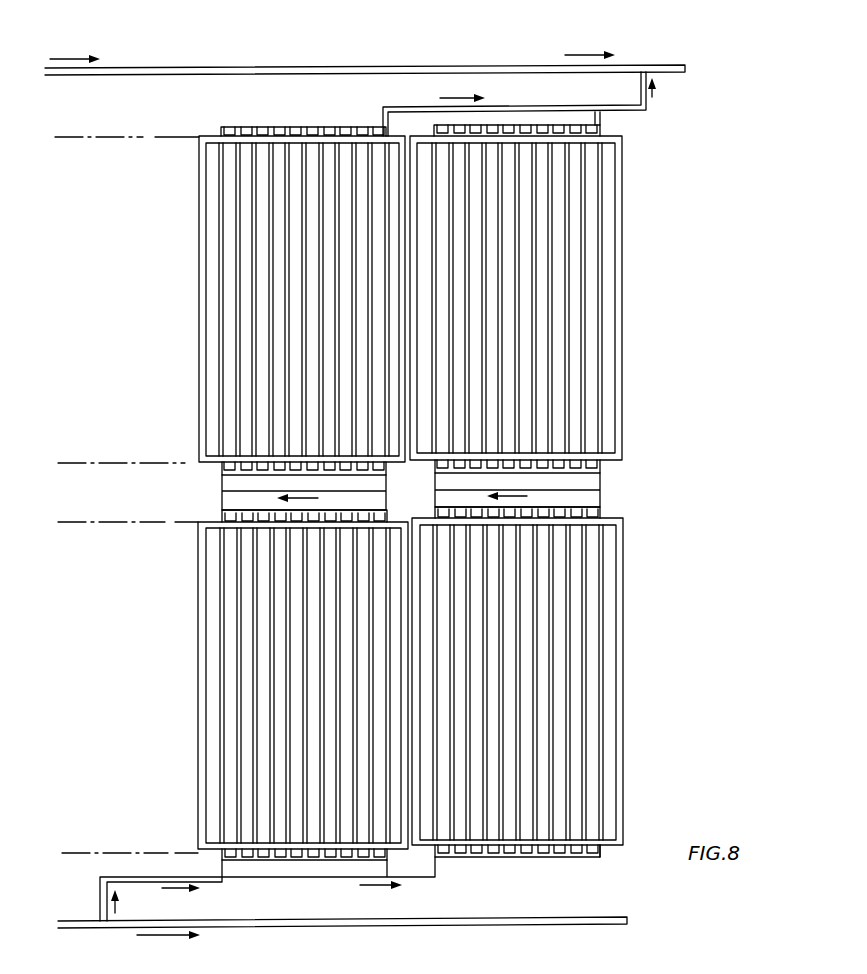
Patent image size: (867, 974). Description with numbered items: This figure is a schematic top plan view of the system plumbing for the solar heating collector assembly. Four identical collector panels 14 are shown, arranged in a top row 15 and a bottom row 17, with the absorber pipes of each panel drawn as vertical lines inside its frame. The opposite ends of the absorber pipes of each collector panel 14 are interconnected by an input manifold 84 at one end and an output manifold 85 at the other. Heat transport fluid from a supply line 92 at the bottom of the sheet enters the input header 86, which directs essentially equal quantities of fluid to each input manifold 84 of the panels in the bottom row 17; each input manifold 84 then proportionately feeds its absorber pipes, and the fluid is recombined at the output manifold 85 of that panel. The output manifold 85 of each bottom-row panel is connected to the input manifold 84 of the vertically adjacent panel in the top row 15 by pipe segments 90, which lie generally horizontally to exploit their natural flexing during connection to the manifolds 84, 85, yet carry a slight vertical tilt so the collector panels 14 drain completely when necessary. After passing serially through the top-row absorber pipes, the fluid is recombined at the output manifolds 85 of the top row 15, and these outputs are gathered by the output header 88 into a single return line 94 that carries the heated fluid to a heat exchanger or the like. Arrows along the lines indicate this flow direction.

The collector panel 14 is at (200, 303).
The top row 15 is at (642, 256).
The bottom row 17 is at (641, 697).
The input manifold 84 is at (226, 477).
The output manifold 85 is at (224, 127).
The input header 86 is at (280, 878).
The output header 88 is at (542, 110).
The pipe segment 90 is at (368, 490).
The supply line 92 is at (452, 918).
The return line 94 is at (484, 67).